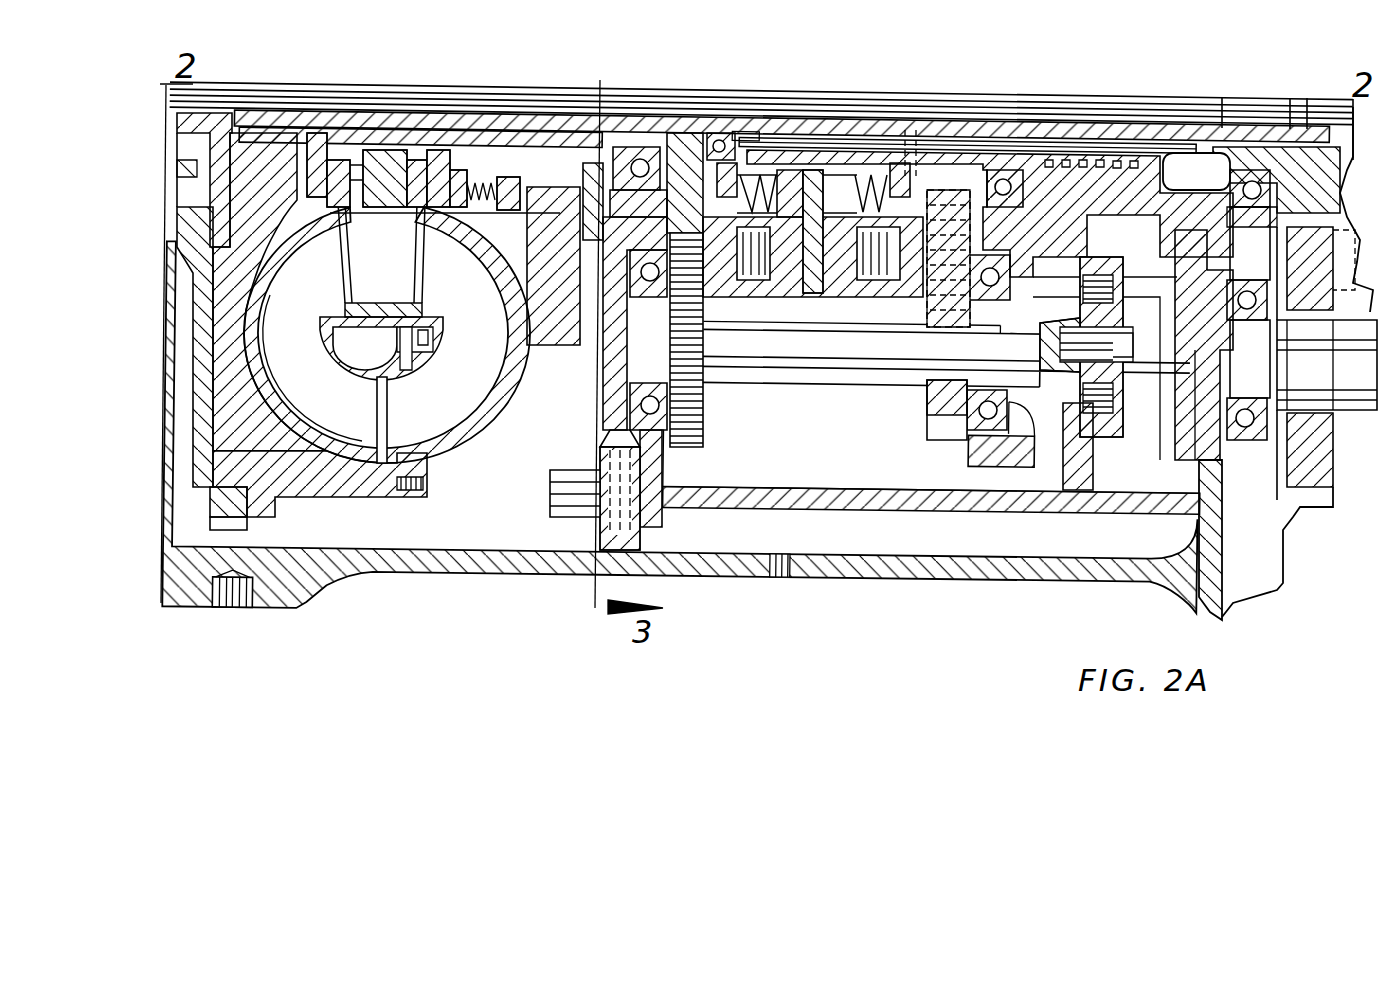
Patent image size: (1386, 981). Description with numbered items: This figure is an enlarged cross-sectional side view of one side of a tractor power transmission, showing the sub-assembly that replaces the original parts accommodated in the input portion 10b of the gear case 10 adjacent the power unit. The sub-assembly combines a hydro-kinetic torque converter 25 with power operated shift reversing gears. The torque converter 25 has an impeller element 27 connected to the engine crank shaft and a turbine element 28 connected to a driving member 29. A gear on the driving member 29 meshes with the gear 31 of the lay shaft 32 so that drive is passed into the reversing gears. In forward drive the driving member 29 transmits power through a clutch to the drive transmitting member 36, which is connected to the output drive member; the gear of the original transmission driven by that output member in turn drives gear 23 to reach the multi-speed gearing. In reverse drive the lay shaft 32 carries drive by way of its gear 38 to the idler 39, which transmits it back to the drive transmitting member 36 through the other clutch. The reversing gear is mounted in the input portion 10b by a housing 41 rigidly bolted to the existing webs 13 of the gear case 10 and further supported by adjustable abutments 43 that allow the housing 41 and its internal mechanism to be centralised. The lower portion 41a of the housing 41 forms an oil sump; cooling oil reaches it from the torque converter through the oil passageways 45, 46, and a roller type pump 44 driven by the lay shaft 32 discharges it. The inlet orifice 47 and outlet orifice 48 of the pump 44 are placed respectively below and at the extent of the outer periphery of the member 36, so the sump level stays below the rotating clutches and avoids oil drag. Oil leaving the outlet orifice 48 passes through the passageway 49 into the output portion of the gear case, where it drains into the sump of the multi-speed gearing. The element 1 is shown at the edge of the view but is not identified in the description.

The shaft end 1 is at (1331, 337).
The gear case 10 is at (1112, 578).
The input portion of the gear case 10b is at (757, 567).
The webs of the gear case 13 is at (1207, 547).
The gear 23 is at (1320, 240).
The hydro-kinetic torque converter 25 is at (450, 467).
The impeller element 27 is at (387, 335).
The turbine element 28 is at (375, 333).
The driving member 29 is at (532, 118).
The gear of the lay shaft 31 is at (697, 413).
The lay shaft 32 is at (830, 367).
The drive transmitting member 36 is at (820, 283).
The gear of the lay shaft 38 is at (930, 407).
The idler 39 is at (980, 239).
The housing 41 is at (860, 500).
The lower portion of the housing 41a is at (852, 464).
The abutments 43 is at (633, 542).
The roller type pump 44 is at (1109, 347).
The oil passageway 45 is at (725, 116).
The oil passageway 46 is at (930, 121).
The inlet orifice 47 is at (1063, 403).
The outlet orifice 48 is at (1127, 287).
The passageway 49 is at (1203, 220).